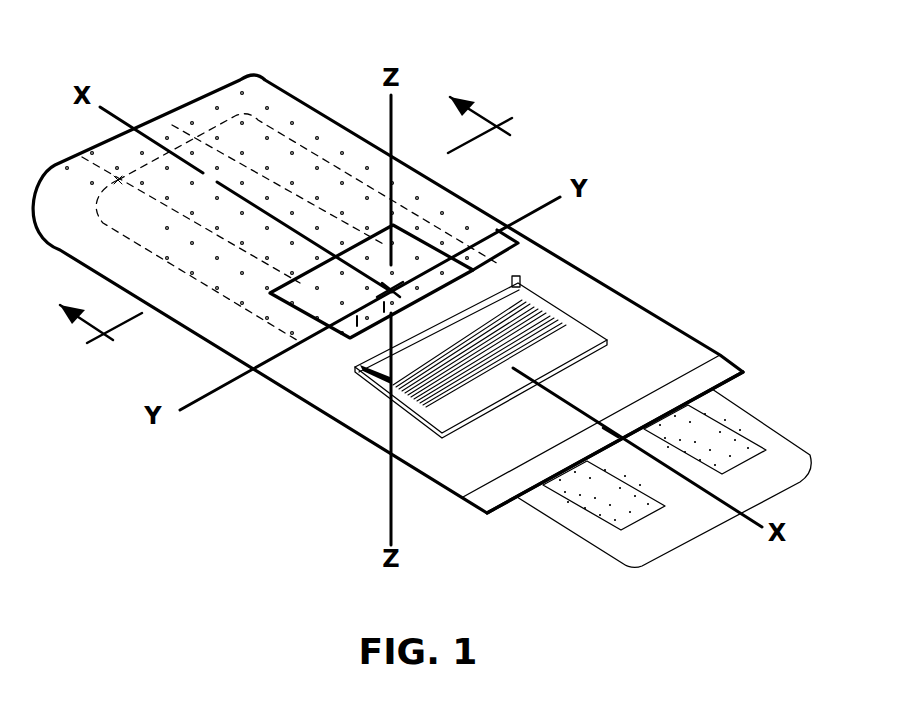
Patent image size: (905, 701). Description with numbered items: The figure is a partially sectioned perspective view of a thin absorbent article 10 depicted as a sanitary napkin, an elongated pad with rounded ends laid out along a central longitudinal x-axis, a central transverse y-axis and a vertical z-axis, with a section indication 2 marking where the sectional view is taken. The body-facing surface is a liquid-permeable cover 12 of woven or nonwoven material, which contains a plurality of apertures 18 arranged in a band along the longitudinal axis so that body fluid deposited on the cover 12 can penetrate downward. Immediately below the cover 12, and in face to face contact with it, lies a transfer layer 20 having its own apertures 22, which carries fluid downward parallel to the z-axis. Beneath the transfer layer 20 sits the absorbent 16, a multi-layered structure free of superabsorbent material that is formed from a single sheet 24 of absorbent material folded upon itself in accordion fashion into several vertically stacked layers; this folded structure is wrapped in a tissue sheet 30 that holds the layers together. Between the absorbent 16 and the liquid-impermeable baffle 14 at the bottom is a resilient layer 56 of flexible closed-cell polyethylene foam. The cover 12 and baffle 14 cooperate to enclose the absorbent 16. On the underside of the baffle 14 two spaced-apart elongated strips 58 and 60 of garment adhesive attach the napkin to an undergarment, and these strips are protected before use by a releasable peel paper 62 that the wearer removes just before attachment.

The thin absorbent article 10 is at (650, 113).
The liquid-permeable cover 12 is at (523, 234).
The liquid-impermeable baffle 14 is at (732, 362).
The absorbent 16 is at (527, 286).
The apertures 18 is at (199, 122).
The transfer layer 20 is at (404, 258).
The apertures 22 is at (384, 306).
The sheet 24 is at (590, 340).
The tissue sheet 30 is at (503, 265).
The resilient layer 56 is at (683, 343).
The garment adhesive strip 58 is at (600, 500).
The garment adhesive strip 60 is at (725, 440).
The releasable peel paper 62 is at (785, 487).
The section line 2- 2 is at (298, 230).